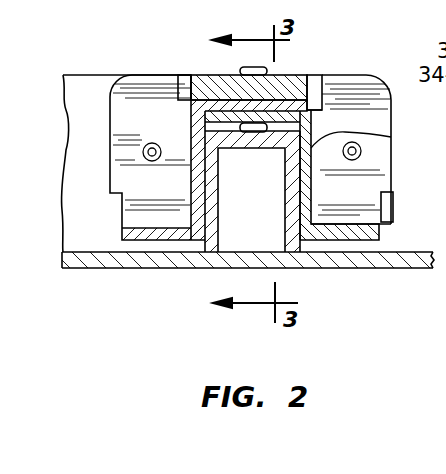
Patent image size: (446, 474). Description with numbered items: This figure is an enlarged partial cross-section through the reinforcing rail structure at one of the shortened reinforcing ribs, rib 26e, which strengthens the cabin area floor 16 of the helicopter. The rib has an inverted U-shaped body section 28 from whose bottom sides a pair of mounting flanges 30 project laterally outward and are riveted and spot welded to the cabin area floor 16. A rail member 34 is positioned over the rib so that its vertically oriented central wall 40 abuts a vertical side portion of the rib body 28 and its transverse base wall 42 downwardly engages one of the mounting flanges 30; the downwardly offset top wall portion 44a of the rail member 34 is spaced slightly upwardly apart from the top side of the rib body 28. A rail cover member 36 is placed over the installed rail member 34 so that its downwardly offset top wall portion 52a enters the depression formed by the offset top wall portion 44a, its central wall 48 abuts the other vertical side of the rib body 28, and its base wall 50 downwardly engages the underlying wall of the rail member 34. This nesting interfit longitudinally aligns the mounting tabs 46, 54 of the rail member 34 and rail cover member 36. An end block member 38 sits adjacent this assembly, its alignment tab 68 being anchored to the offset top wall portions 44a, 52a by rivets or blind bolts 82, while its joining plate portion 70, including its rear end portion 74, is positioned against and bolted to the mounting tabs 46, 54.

The cabin area floor 16 is at (414, 260).
The reinforcing rib 26e is at (281, 198).
The inverted U-shaped body section 28 is at (218, 222).
The mounting flanges 30 is at (165, 243).
The rail member 34 is at (318, 195).
The rail cover member 36 is at (185, 174).
The end block member 38 is at (399, 199).
The central wall 40 is at (393, 137).
The base wall 42 is at (350, 228).
The downwardly offset end portion of top wall 44a is at (312, 124).
The mounting tab 46 is at (393, 110).
The central wall 48 is at (186, 139).
The base wall 50 is at (135, 227).
The downwardly offset end portion of top wall 52a is at (288, 75).
The mounting tab 54 is at (140, 76).
The alignment tab 68 is at (208, 74).
The joining plate portion 70 is at (75, 125).
The rear end portion of joining plate 74 is at (375, 75).
The rivets or blind bolts 82 is at (250, 66).